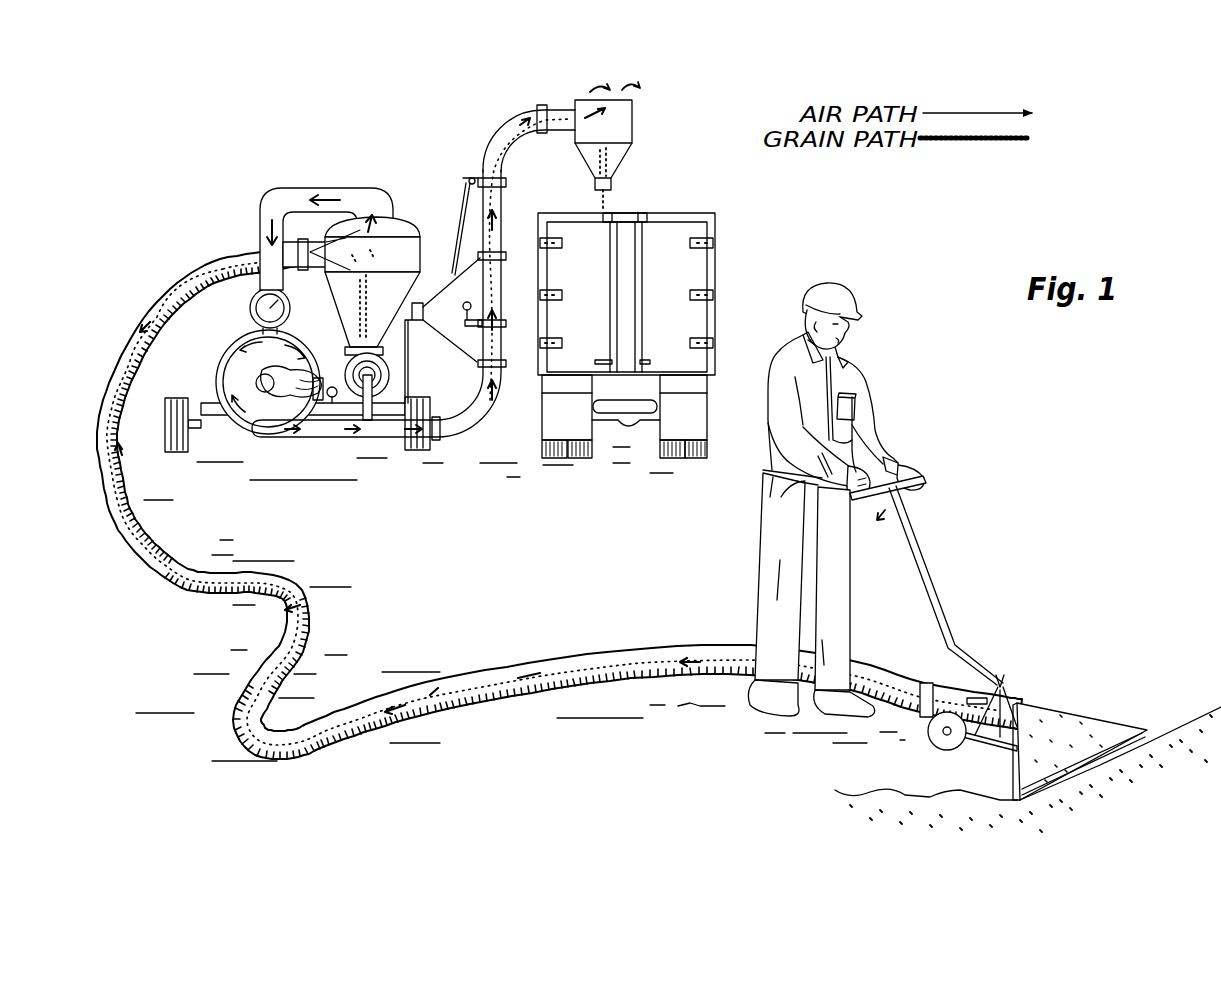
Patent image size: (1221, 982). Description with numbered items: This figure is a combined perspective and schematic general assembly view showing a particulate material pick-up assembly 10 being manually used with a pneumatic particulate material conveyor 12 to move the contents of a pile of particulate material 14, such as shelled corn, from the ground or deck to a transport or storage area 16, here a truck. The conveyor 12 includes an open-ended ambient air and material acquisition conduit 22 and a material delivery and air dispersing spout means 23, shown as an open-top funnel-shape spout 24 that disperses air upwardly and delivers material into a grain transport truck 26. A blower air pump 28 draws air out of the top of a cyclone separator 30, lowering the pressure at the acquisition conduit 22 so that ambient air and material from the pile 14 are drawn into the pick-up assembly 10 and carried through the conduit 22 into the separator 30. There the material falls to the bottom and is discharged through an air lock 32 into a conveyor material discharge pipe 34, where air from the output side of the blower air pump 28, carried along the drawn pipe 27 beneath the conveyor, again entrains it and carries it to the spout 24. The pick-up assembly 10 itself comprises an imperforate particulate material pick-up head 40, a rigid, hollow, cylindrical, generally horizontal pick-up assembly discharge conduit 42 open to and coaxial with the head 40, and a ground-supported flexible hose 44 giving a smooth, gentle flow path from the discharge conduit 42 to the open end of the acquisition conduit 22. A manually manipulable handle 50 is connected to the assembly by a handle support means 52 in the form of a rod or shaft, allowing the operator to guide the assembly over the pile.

The particulate material pick-up assembly 10 is at (1006, 721).
The pneumatic particulate material conveyor 12 is at (400, 183).
The pile of particulate material 14 is at (1210, 722).
The transport or storage areas 16 is at (669, 327).
The ambient air and material acquisition conduit 22 is at (300, 272).
The material delivery and air dispersing spout means 23 is at (650, 140).
The funnel-shape spout 24 is at (632, 113).
The grain transport truck 26 is at (700, 317).
The air return pipe 27 is at (312, 437).
The blower air pump 28 is at (230, 367).
The cyclone separator 30 is at (393, 233).
The air lock 32 is at (388, 377).
The conveyor material discharge pipe 34 is at (499, 211).
The particulate material pick-up head 40 is at (1065, 728).
The pick-up assembly discharge conduit 42 is at (940, 703).
The flexible hose 44 is at (440, 700).
The manually manipulable handle 50 is at (913, 468).
The handle support means 52 is at (922, 562).